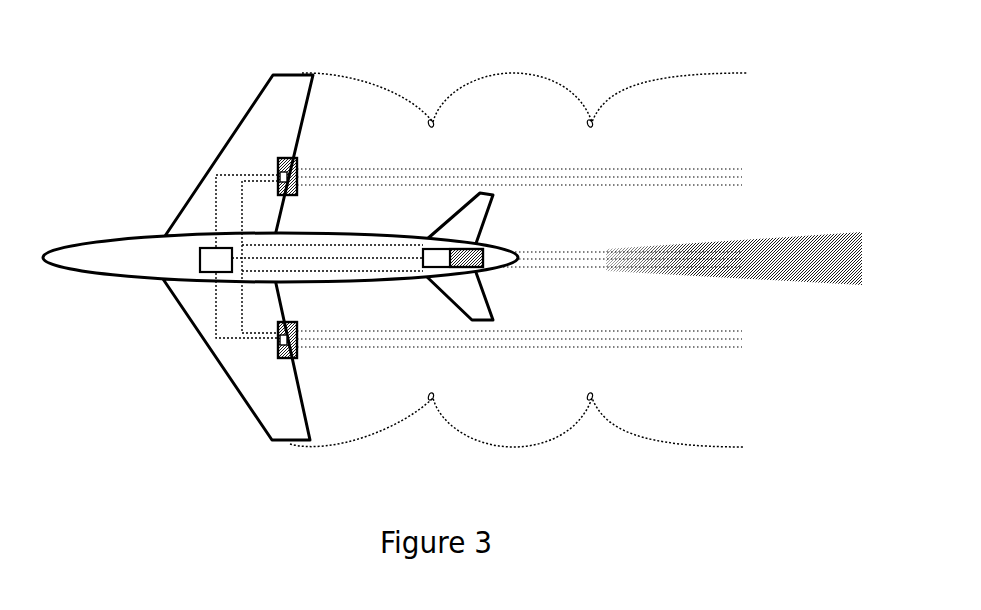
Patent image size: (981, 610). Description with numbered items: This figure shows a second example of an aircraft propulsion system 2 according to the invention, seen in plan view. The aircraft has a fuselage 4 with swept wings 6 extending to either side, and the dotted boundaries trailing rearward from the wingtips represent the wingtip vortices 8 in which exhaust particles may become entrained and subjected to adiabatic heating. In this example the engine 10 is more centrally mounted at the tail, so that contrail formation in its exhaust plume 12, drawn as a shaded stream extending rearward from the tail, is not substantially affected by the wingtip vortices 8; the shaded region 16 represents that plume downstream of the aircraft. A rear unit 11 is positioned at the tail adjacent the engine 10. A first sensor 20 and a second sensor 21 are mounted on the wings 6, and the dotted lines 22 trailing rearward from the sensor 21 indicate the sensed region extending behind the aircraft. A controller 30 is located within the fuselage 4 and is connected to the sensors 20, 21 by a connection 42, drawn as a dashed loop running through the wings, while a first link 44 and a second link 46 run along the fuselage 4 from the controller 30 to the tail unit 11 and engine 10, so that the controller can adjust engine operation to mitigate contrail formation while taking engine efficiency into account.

The aircraft system 2 is at (104, 104).
The fuselage 4 is at (105, 288).
The wing 6 is at (172, 222).
The wingtip vortices 8 is at (323, 72).
The engine 10 is at (494, 242).
The rear sensor unit 11 is at (443, 268).
The exhaust plume 12 is at (560, 268).
The exhaust / wake stream 16 is at (636, 255).
The first wing sensor 20 is at (297, 165).
The second wing sensor 21 is at (287, 323).
The wing sensor beams 22 is at (427, 348).
The controller 30 is at (200, 259).
The sensor data connection 42 is at (214, 197).
The first data link 44 is at (355, 245).
The second data link 46 is at (342, 262).